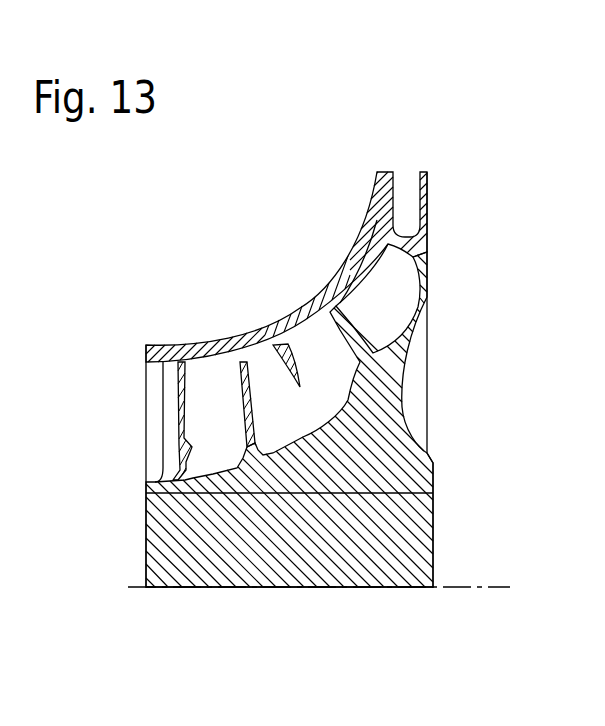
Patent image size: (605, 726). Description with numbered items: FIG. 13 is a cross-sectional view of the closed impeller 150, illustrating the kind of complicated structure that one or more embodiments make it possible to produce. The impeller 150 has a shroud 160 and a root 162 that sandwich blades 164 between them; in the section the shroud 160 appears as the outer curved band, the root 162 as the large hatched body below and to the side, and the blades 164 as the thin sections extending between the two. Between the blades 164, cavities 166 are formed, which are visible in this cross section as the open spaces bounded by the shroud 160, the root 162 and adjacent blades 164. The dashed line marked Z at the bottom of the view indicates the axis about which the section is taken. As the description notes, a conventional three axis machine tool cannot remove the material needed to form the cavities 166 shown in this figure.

The impeller 150 is at (222, 241).
The shroud 160 is at (380, 190).
The root 162 is at (385, 445).
The blades 164 is at (247, 440).
The cavities 166 is at (380, 293).
The axis of rotation Z is at (463, 588).